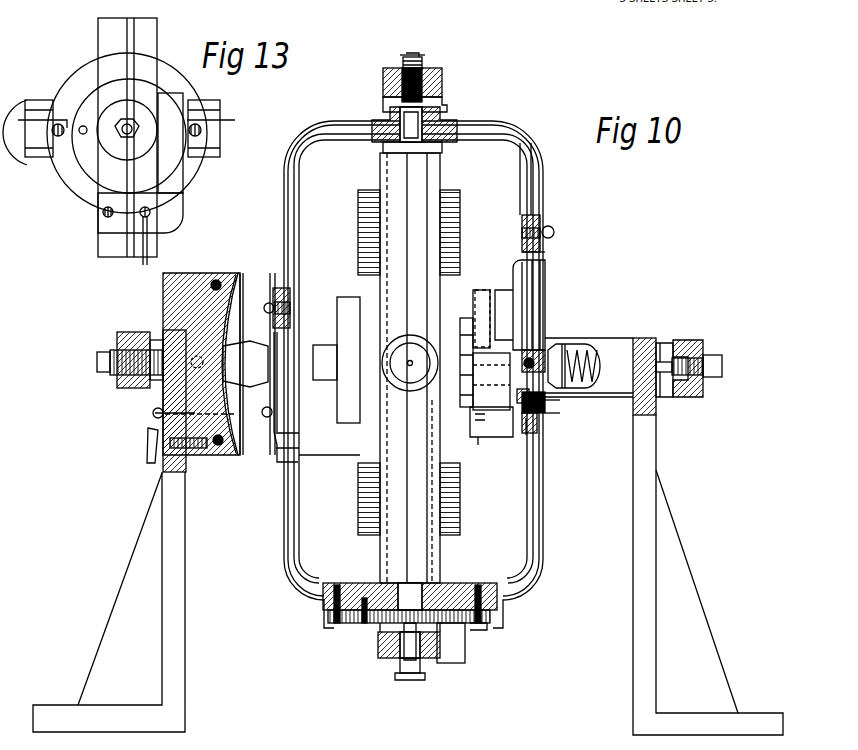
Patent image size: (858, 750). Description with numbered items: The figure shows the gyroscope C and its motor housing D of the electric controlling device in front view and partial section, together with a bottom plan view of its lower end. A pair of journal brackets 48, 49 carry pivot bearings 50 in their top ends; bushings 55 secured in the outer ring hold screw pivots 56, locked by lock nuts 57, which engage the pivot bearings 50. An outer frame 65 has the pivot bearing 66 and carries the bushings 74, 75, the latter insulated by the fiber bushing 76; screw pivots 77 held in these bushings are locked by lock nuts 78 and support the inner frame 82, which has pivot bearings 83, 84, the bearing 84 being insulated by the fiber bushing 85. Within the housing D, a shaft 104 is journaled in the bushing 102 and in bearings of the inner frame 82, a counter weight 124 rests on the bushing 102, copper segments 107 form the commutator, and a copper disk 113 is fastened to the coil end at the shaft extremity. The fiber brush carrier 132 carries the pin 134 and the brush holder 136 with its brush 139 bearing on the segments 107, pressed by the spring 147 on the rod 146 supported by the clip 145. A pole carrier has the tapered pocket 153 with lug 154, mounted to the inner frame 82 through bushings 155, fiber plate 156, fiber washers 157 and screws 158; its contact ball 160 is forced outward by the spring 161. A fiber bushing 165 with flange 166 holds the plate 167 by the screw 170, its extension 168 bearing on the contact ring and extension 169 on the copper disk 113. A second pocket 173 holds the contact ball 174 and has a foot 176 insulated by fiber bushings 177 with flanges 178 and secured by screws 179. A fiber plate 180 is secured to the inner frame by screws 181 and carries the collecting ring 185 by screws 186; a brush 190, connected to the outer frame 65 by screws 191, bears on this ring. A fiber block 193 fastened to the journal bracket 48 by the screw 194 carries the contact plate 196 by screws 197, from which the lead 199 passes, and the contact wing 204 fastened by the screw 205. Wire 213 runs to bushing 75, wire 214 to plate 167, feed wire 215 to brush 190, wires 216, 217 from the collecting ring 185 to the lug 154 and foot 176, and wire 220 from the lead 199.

In FIG. 10, the gyroscope C is at (320, 124).
In FIG. 10, the motor housing D is at (362, 232).
In FIG. 10, the journal bracket 48 is at (185, 571).
In FIG. 10, the journal bracket 49 is at (633, 568).
In FIG. 10, the pivot bearings 50 is at (170, 340).
In FIG. 10, the bushings 55 is at (120, 388).
In FIG. 10, the screw pivots 56 is at (95, 350).
In FIG. 10, the lock nuts 57 is at (120, 332).
In FIG. 13, the outer frame 65 is at (98, 24).
In FIG. 10, the outer frame 65 is at (358, 520).
In FIG. 10, the pivot bearing 66 is at (408, 368).
In FIG. 10, the bushing 74 is at (378, 645).
In FIG. 10, the bushing 75 is at (447, 104).
In FIG. 10, the fiber bushing 76 is at (442, 78).
In FIG. 13, the screw pivots 77 is at (127, 129).
In FIG. 10, the screw pivots 77 is at (402, 53).
In FIG. 13, the lock nuts 78 is at (136, 140).
In FIG. 10, the lock nuts 78 is at (424, 57).
In FIG. 13, the inner frame 82 is at (45, 100).
In FIG. 10, the inner frame 82 is at (535, 526).
In FIG. 10, the pivot bearing 83 is at (455, 590).
In FIG. 10, the pivot bearing 84 is at (440, 150).
In FIG. 10, the fiber bushing 85 is at (382, 146).
In FIG. 10, the bushing 102 is at (325, 380).
In FIG. 10, the shaft 104 is at (305, 355).
In FIG. 10, the copper segments 107 is at (489, 429).
In FIG. 10, the copper disk 113 is at (540, 358).
In FIG. 10, the counter weight 124 is at (329, 441).
In FIG. 10, the fiber brush carrier 132 is at (495, 371).
In FIG. 10, the pin 134 is at (460, 345).
In FIG. 10, the brush holder 136 is at (482, 288).
In FIG. 10, the brush 139 is at (473, 300).
In FIG. 10, the clip 145 is at (482, 436).
In FIG. 10, the rod 146 is at (517, 403).
In FIG. 10, the spring 147 is at (497, 422).
In FIG. 10, the tapered pocket 153 is at (575, 345).
In FIG. 10, the lug 154 is at (548, 407).
In FIG. 10, the bushings 155 is at (523, 434).
In FIG. 10, the fiber plate 156 is at (537, 430).
In FIG. 10, the fiber washers 157 is at (560, 413).
In FIG. 10, the screws 158 is at (560, 400).
In FIG. 10, the contact ball 160 is at (600, 361).
In FIG. 10, the spring 161 is at (596, 348).
In FIG. 10, the fiber bushing 165 is at (520, 222).
In FIG. 10, the flange 166 is at (545, 210).
In FIG. 10, the plate 167 is at (545, 250).
In FIG. 10, the extension 168 is at (500, 292).
In FIG. 10, the extension 169 is at (545, 310).
In FIG. 10, the screw 170 is at (553, 228).
In FIG. 10, the tapered pocket 173 is at (261, 388).
In FIG. 10, the contact ball 174 is at (219, 362).
In FIG. 10, the foot 176 is at (258, 278).
In FIG. 10, the fiber bushings 177 is at (292, 300).
In FIG. 10, the flanges 178 is at (303, 420).
In FIG. 10, the screws 179 is at (262, 430).
In FIG. 13, the fiber plate 180 is at (190, 166).
In FIG. 10, the fiber plate 180 is at (490, 626).
In FIG. 13, the screws 181 is at (138, 144).
In FIG. 10, the screws 181 is at (336, 628).
In FIG. 13, the collecting ring 185 is at (90, 158).
In FIG. 10, the collecting ring 185 is at (335, 625).
In FIG. 13, the screws 186 is at (96, 117).
In FIG. 10, the screws 186 is at (364, 596).
In FIG. 13, the brush 190 is at (170, 186).
In FIG. 10, the brush 190 is at (465, 663).
In FIG. 13, the screws 191 is at (128, 206).
In FIG. 10, the fiber block 193 is at (200, 285).
In FIG. 10, the screw 194 is at (167, 448).
In FIG. 10, the contact plate 196 is at (243, 326).
In FIG. 10, the screws 197 is at (217, 280).
In FIG. 10, the lead 199 is at (155, 418).
In FIG. 10, the contact wing 204 is at (308, 461).
In FIG. 10, the screw 205 is at (152, 412).
In FIG. 10, the wire 213 is at (385, 254).
In FIG. 10, the wire 214 is at (527, 126).
In FIG. 13, the feed wire 215 is at (143, 268).
In FIG. 10, the feed wire 215 is at (460, 513).
In FIG. 13, the wire 216 is at (220, 118).
In FIG. 10, the wire 216 is at (520, 600).
In FIG. 13, the wire 217 is at (34, 162).
In FIG. 10, the wire 217 is at (292, 580).
In FIG. 10, the wire 220 is at (148, 450).